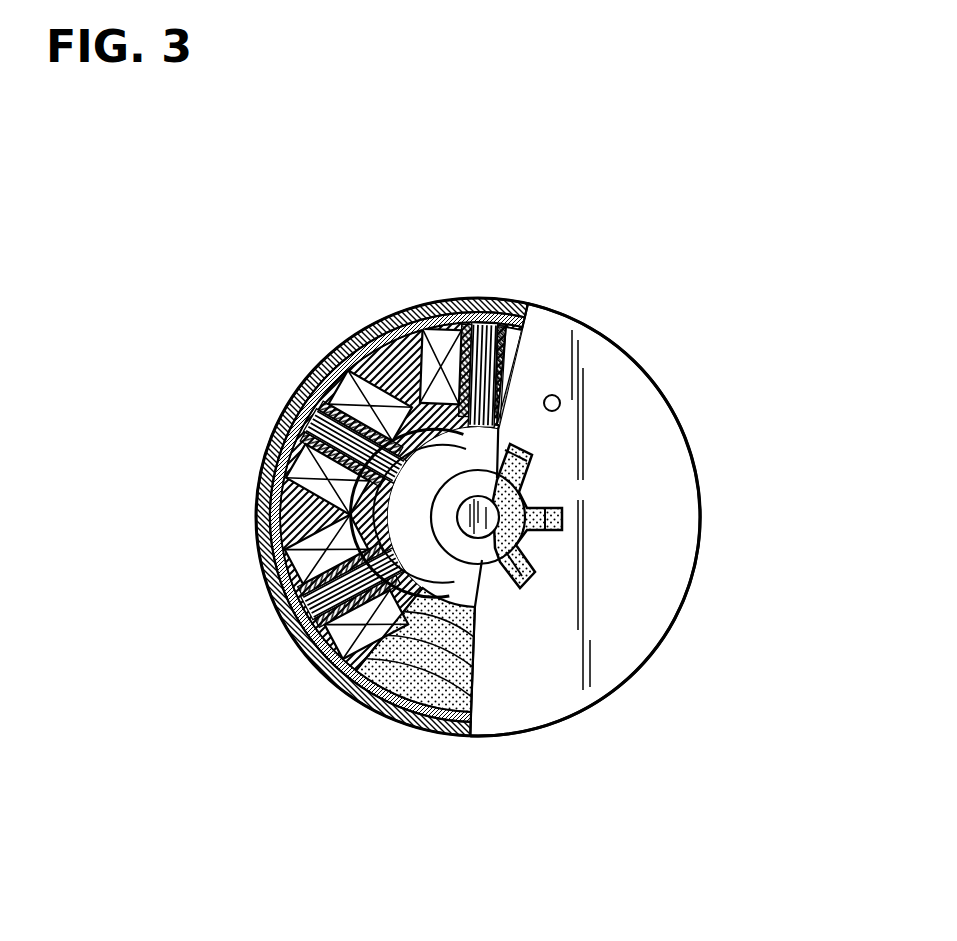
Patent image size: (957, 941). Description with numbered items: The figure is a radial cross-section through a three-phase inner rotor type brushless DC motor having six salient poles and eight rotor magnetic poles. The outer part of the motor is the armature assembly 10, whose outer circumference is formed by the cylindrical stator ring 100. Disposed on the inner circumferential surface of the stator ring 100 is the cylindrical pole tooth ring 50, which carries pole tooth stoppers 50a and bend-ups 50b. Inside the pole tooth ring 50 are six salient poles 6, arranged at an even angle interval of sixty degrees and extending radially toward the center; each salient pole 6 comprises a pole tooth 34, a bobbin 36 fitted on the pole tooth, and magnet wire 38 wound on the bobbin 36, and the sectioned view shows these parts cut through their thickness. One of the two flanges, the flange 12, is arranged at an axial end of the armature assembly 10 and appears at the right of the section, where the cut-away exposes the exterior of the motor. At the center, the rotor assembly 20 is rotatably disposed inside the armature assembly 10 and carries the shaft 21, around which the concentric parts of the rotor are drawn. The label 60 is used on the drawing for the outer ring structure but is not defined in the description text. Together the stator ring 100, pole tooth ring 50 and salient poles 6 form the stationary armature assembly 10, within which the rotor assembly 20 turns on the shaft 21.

The armature assembly 10 is at (728, 488).
The flange 12 is at (622, 412).
The rotor assembly 20 is at (437, 483).
The shaft 21 is at (493, 520).
The salient pole 6 is at (416, 479).
The pole tooth 34 is at (318, 434).
The bobbin 36 is at (323, 392).
The magnet wire 38 is at (345, 400).
The cylindrical pole tooth ring 50 is at (438, 302).
The pole tooth stopper 50a is at (527, 312).
The bend-up 50b is at (478, 308).
The ring member 60 is at (362, 342).
The cylindrical stator ring 100 is at (363, 712).